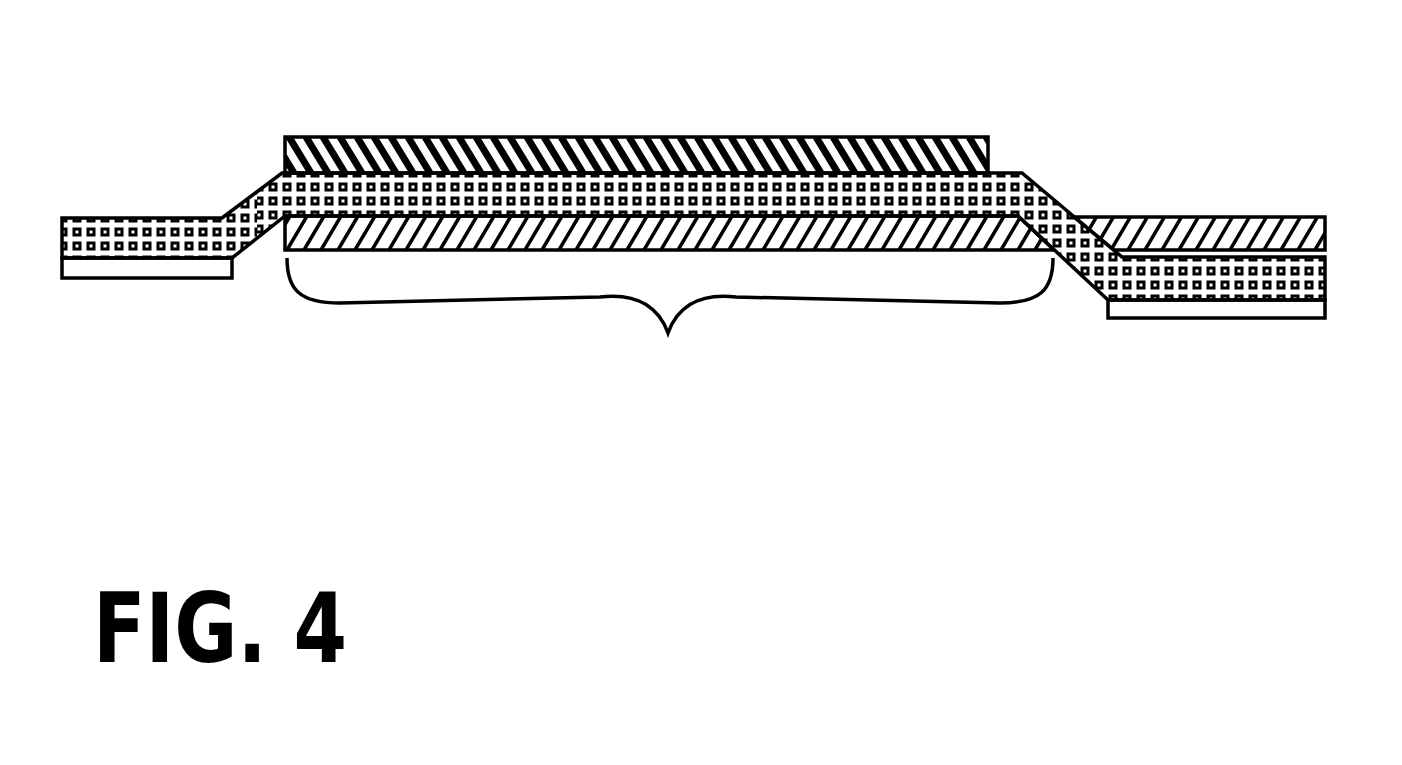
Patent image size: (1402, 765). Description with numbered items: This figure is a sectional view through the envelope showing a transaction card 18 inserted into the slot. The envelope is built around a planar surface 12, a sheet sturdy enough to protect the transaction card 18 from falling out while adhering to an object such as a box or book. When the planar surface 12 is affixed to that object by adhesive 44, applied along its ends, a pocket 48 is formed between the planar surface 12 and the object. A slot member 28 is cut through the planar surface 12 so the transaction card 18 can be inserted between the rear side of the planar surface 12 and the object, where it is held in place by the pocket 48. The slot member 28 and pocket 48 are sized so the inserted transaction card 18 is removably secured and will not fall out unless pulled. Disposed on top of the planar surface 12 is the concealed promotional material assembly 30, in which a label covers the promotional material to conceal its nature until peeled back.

The planar surface 12 is at (1023, 173).
The transaction card 18 is at (1297, 217).
The slot member 28 is at (1077, 217).
The concealed promotional material assembly 30 is at (803, 139).
The adhesive 44 is at (153, 268).
The pocket 48 is at (670, 323).